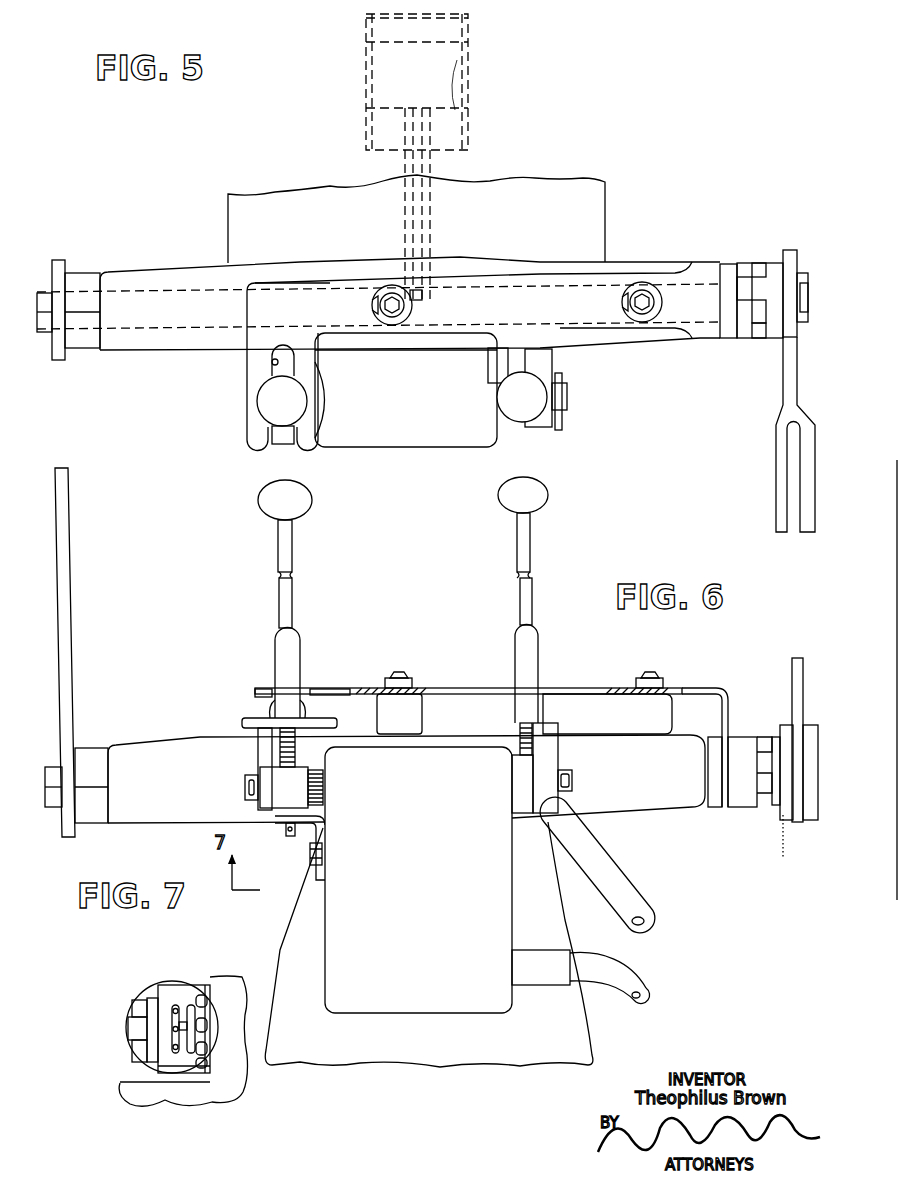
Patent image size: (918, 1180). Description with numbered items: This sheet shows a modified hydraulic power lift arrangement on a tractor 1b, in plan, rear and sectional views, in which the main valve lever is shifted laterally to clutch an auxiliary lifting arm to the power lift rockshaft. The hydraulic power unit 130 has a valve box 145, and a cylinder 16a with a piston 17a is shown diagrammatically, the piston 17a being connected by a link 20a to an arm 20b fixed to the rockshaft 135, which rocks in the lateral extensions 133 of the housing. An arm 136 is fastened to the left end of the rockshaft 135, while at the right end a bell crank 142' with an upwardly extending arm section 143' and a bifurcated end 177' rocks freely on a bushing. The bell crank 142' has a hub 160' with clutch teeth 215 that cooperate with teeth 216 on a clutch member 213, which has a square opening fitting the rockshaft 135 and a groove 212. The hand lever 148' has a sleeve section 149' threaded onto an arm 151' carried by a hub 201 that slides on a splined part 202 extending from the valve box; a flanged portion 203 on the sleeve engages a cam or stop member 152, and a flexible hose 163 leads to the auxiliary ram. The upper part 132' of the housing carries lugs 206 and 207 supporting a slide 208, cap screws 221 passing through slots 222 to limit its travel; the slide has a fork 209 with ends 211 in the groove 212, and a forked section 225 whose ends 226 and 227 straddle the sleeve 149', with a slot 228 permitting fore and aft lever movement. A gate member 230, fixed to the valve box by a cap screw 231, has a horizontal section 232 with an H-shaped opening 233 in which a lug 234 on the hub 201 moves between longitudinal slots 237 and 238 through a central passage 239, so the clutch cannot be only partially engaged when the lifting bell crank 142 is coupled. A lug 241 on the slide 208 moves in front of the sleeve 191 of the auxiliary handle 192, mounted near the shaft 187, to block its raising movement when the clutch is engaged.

In FIG. 5, the tractor 1b is at (226, 215).
In FIG. 5, the cylinder 16a is at (468, 93).
In FIG. 5, the piston 17a is at (448, 54).
In FIG. 5, the link 20a is at (427, 212).
In FIG. 5, the arm 20b is at (418, 258).
In FIG. 5, the upper part of the power lift housing 132' is at (351, 251).
In FIG. 5, the lateral extensions 133 is at (120, 345).
In FIG. 6, the lateral extensions 133 is at (148, 753).
In FIG. 5, the rockshaft 135 is at (44, 293).
In FIG. 6, the rockshaft 135 is at (60, 768).
In FIG. 5, the arm 136 is at (68, 358).
In FIG. 6, the arm 136 is at (77, 652).
In FIG. 5, the bell crank 142 is at (767, 391).
In FIG. 6, the bell crank 142' is at (762, 671).
In FIG. 6, the upwardly extending arm section 143' is at (776, 714).
In FIG. 6, the valve box 145 is at (433, 980).
In FIG. 6, the hand lever 148' is at (321, 554).
In FIG. 6, the sleeve section 149' is at (317, 672).
In FIG. 6, the arm 151' is at (334, 748).
In FIG. 6, the cam or stop member 152 is at (260, 749).
In FIG. 6, the hub 160' is at (761, 815).
In FIG. 6, the flexible hose 163 is at (607, 868).
In FIG. 6, the bifurcated end 177' is at (798, 798).
In FIG. 6, the shaft 187 is at (573, 776).
In FIG. 6, the sleeve 191 is at (532, 657).
In FIG. 6, the valve operating handle 192 is at (530, 596).
In FIG. 6, the hub 201 is at (310, 803).
In FIG. 6, the splined part 202 is at (297, 795).
In FIG. 6, the flanged portion 203 is at (247, 721).
In FIG. 6, the lug 206 is at (410, 707).
In FIG. 6, the lug 207 is at (632, 707).
In FIG. 5, the slide 208 is at (468, 295).
In FIG. 6, the slide 208 is at (465, 688).
In FIG. 6, the fork 209 is at (723, 726).
In FIG. 6, the fork ends 211 is at (720, 762).
In FIG. 6, the groove 212 is at (723, 808).
In FIG. 6, the clutch member 213 is at (736, 743).
In FIG. 6, the clutch teeth 215 is at (760, 803).
In FIG. 6, the teeth 216 is at (750, 793).
In FIG. 6, the cap screws 221 is at (402, 678).
In FIG. 6, the slots 222 is at (378, 688).
In FIG. 5, the forked section 225 is at (245, 452).
In FIG. 5, the fork end 226 is at (255, 455).
In FIG. 6, the fork end 226 is at (265, 690).
In FIG. 5, the fork end 227 is at (306, 447).
In FIG. 6, the fork end 227 is at (314, 694).
In FIG. 5, the slot 228 is at (272, 362).
In FIG. 6, the gate member 230 is at (309, 829).
In FIG. 6, the cap screw 231 is at (306, 858).
In FIG. 6, the horizontal section 232 is at (272, 820).
In FIG. 7, the horizontal section 232 is at (173, 1000).
In FIG. 7, the H-shaped opening 233 is at (173, 1052).
In FIG. 6, the lug 234 is at (288, 826).
In FIG. 7, the lug 234 is at (172, 1030).
In FIG. 7, the longitudinal slot 237 is at (172, 1015).
In FIG. 7, the longitudinal slot 238 is at (192, 1027).
In FIG. 7, the central passage 239 is at (184, 1042).
In FIG. 5, the lug 241 is at (497, 384).
In FIG. 5, the hydraulic power unit 130 is at (386, 452).
In FIG. 6, the hydraulic power unit 130 is at (318, 987).